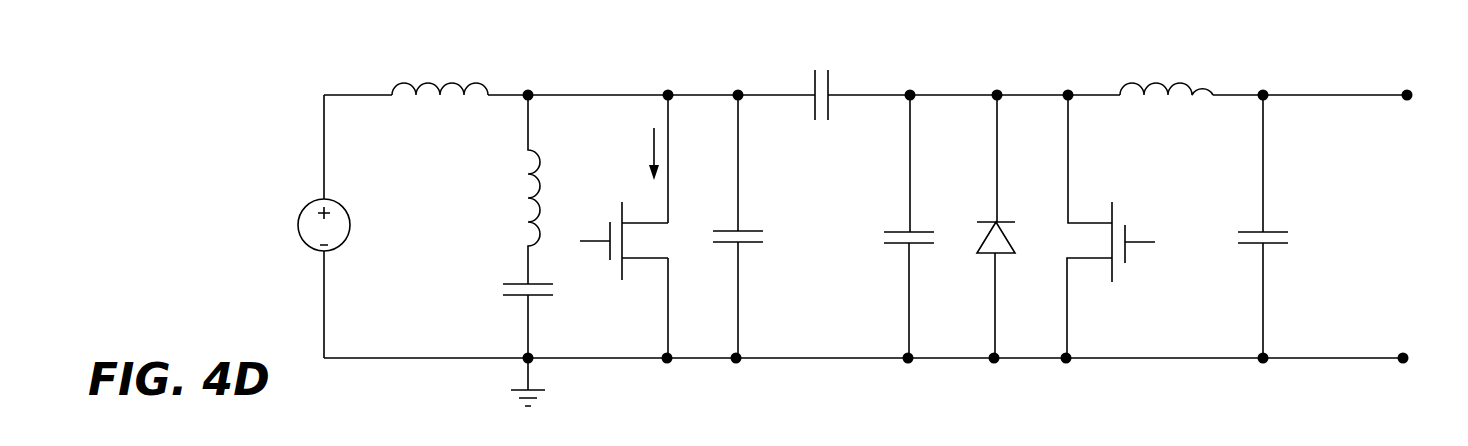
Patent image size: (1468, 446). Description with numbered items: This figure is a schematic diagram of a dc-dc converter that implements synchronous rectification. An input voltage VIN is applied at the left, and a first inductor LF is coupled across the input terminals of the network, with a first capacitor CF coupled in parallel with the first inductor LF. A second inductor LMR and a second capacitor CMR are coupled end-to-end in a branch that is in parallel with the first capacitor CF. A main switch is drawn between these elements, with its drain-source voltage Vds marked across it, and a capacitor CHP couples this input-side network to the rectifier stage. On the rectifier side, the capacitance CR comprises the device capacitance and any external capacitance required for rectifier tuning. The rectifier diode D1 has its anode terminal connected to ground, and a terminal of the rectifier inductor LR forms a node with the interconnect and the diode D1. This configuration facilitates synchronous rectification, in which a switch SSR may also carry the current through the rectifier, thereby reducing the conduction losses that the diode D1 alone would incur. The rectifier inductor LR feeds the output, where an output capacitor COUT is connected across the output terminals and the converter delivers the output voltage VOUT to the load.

The input voltage source VIN is at (302, 225).
The first inductor LF is at (440, 74).
The second inductor LMR is at (511, 189).
The second capacitor CMR is at (499, 316).
The main switch drain-source voltage Vds is at (638, 226).
The first capacitor CF is at (753, 226).
The high-pass capacitor CHP is at (825, 81).
The capacitance CR is at (892, 226).
The diode D1 is at (1013, 226).
The switch SSR is at (1114, 226).
The rectifier inductor LR is at (1166, 74).
The output capacitor COUT is at (1288, 226).
The output voltage VOUT is at (1404, 235).